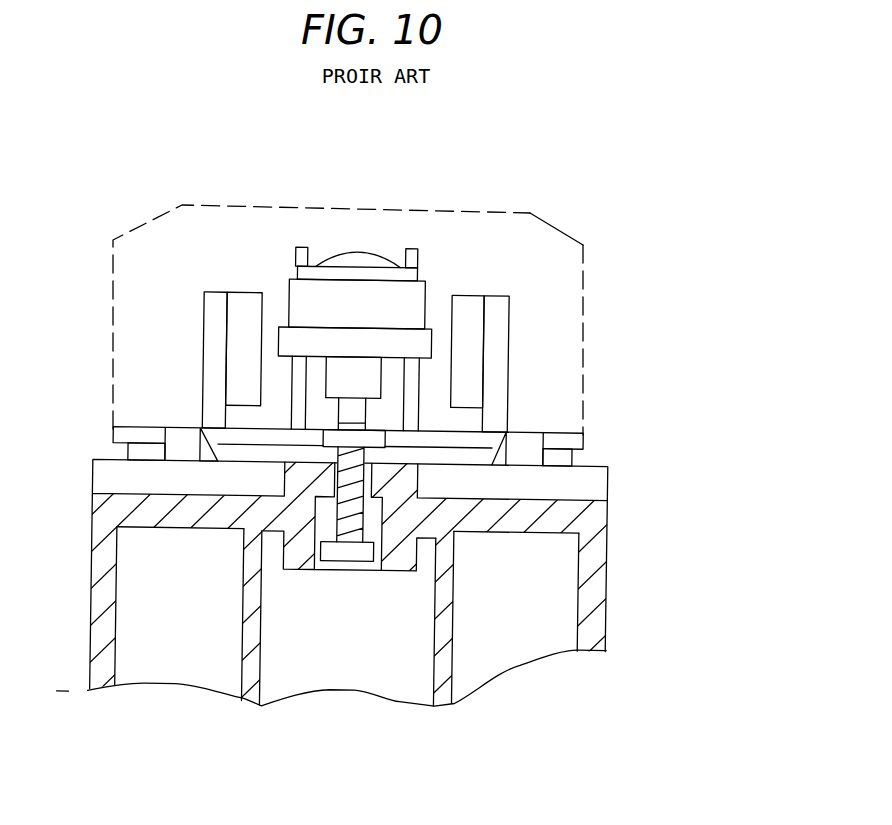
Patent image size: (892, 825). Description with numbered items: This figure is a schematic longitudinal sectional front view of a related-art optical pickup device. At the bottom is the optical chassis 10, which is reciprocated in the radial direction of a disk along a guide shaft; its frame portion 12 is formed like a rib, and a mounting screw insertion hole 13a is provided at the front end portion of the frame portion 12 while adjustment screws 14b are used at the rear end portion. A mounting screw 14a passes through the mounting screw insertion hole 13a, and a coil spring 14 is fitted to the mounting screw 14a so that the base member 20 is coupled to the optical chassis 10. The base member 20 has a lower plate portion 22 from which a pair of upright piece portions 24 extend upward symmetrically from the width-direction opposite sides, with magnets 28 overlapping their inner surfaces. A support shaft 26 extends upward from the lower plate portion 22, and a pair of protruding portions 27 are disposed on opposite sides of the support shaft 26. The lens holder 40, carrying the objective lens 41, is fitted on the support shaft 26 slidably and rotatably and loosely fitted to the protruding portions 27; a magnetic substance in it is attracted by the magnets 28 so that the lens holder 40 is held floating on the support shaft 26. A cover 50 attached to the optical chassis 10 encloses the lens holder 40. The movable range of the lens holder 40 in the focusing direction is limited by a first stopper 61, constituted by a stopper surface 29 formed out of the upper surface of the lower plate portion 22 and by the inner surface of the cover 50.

The optical chassis 10 is at (630, 569).
The frame portion 12 is at (600, 490).
The mounting screw insertion hole 13a is at (367, 508).
The coil spring 14 is at (352, 560).
The mounting screw 14a is at (332, 572).
The adjustment screw 14b is at (127, 453).
The base member 20 is at (130, 420).
The lower plate portion 22 is at (455, 447).
The upright piece portions 24 is at (212, 292).
The support shaft 26 is at (368, 413).
The protruding portions 27 is at (300, 247).
The magnets 28 is at (242, 292).
The stopper surface 29 is at (373, 423).
The first stopper 61 is at (554, 318).
The lens holder 40 is at (272, 274).
The objective lens 41 is at (352, 252).
The cover 50 is at (553, 228).